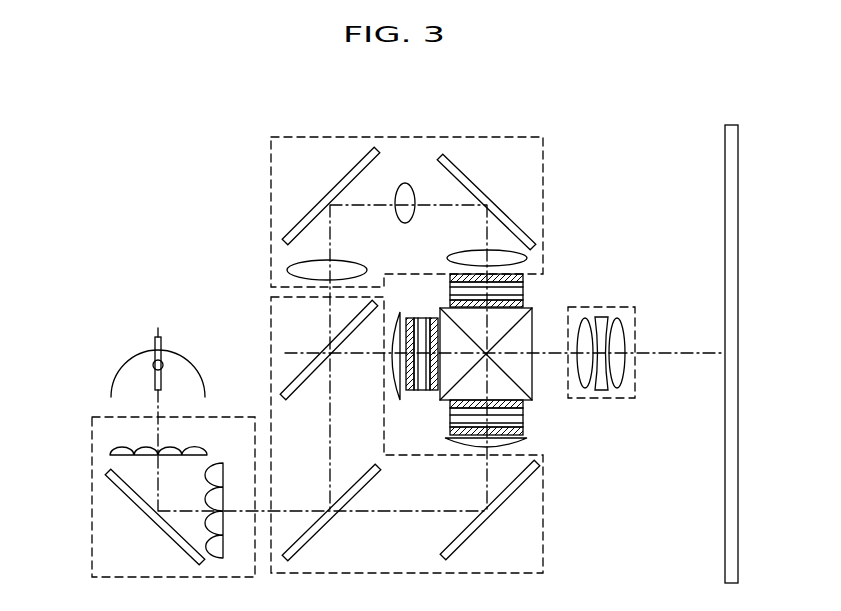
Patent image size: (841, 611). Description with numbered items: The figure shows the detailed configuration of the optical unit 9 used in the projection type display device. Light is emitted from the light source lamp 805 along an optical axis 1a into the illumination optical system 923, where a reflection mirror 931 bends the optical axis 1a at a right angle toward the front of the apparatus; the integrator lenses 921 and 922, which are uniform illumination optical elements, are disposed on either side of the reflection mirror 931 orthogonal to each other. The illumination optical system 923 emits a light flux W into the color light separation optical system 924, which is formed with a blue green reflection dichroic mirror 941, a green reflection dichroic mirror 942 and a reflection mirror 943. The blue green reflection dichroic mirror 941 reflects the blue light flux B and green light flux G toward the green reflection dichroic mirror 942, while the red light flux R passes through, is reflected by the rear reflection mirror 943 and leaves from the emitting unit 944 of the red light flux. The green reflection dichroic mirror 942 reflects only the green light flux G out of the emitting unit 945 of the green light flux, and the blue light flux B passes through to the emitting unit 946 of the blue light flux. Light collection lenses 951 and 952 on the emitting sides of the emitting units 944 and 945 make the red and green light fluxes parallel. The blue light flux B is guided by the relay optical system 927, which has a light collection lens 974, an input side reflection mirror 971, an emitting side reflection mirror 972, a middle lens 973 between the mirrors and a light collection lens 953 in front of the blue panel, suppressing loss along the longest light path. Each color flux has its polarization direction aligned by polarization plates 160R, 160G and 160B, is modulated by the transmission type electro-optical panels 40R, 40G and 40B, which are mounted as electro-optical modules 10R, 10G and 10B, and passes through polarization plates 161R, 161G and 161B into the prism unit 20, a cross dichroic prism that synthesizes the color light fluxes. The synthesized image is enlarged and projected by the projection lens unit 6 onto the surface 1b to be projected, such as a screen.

The optical unit 9 is at (333, 323).
The light source lamp 805 is at (123, 363).
The optical axis 1a is at (160, 399).
The illumination optical system 923 is at (90, 465).
The integrator lens 921 is at (188, 456).
The integrator lens 922 is at (222, 468).
The light flux W is at (233, 510).
The reflection mirror 931 is at (132, 494).
The relay optical system 927 is at (268, 223).
The color light separation optical system 924 is at (266, 311).
The emitting unit of the red light flux 944 is at (483, 460).
The input side reflection mirror 971 is at (325, 202).
The emitting side reflection mirror 972 is at (505, 218).
The middle lens 973 is at (404, 183).
The light collection lens 974 is at (340, 260).
The blue light flux B is at (330, 228).
The light collection lens 953 is at (463, 250).
The emitting unit of the blue light flux 946 is at (328, 303).
The green reflection dichroic mirror 942 is at (288, 398).
The green light flux G is at (347, 353).
The emitting unit of the green light flux 945 is at (393, 358).
The light collection lens 952 is at (397, 312).
The polarization plate 160G is at (406, 392).
The electro-optical panel 40G is at (444, 240).
The electro-optical module 10G is at (425, 318).
The polarization plate 161G is at (432, 392).
The polarization plate 160B is at (524, 277).
The electro-optical panel 40B is at (564, 271).
The electro-optical module 10B is at (525, 290).
The polarization plate 161B is at (528, 302).
The prism unit 20 is at (533, 373).
The polarization plate 161R is at (525, 407).
The electro-optical panel 40R is at (563, 450).
The electro-optical module 10R is at (525, 420).
The polarization plate 160R is at (525, 430).
The light collection lens 951 is at (525, 442).
The blue green reflection dichroic mirror 941 is at (322, 528).
The reflection mirror 943 is at (483, 528).
The red light flux R is at (413, 513).
The projection lens unit 6 is at (645, 372).
The surface to be projected 1b is at (724, 183).